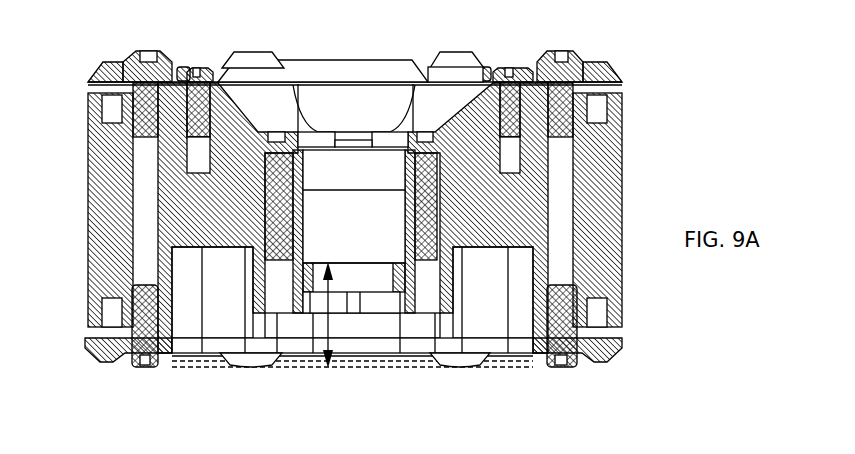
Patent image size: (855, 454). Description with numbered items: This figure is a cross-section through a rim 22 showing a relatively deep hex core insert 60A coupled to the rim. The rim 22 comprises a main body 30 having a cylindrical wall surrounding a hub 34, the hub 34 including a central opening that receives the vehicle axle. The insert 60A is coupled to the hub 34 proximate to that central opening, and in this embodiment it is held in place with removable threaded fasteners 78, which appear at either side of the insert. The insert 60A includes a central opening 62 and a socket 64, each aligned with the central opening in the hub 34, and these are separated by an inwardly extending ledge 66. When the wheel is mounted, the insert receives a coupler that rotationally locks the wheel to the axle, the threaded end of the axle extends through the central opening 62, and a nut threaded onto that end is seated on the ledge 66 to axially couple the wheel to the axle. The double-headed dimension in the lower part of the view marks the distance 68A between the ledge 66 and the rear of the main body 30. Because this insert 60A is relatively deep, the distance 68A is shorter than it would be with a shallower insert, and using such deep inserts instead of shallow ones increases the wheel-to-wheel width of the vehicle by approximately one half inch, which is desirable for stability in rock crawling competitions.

The rim 22 is at (80, 50).
The main body 30 is at (92, 243).
The hub 34 is at (238, 132).
The removable threaded fasteners 78 is at (302, 168).
The central opening 62 is at (345, 200).
The inwardly extending ledge 66 is at (360, 268).
The insert 60A is at (450, 284).
The distance 68A is at (330, 328).
The socket 64 is at (382, 300).